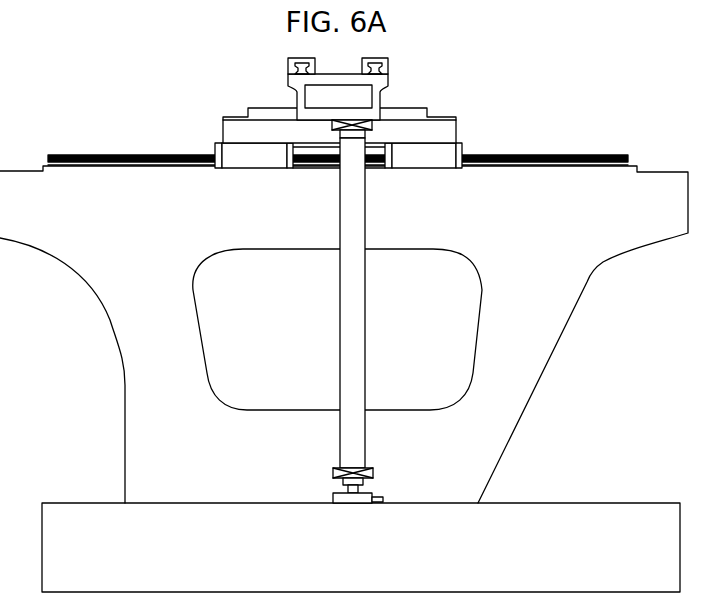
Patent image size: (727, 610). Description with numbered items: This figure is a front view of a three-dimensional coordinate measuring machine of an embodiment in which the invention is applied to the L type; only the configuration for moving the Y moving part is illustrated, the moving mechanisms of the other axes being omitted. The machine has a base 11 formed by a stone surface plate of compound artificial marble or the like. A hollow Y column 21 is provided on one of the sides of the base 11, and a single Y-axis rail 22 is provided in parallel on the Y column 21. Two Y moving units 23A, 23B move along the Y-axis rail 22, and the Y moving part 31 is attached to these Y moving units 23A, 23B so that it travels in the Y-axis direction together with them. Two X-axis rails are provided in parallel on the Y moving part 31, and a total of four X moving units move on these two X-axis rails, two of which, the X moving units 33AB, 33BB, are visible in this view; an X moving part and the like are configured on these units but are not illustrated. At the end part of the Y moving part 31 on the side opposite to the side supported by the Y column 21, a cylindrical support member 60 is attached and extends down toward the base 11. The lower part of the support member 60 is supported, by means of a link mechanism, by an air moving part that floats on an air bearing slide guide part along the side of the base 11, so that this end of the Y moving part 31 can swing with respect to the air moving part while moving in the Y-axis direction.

The base 11 is at (78, 520).
The Y column 21 is at (547, 366).
The Y-axis rail 22 is at (610, 155).
The Y moving unit 23A is at (462, 148).
The Y moving unit 23B is at (215, 150).
The Y moving part 31 is at (407, 112).
The X moving unit 33AB is at (290, 61).
The X moving unit 33BB is at (385, 65).
The support member 60 is at (359, 343).